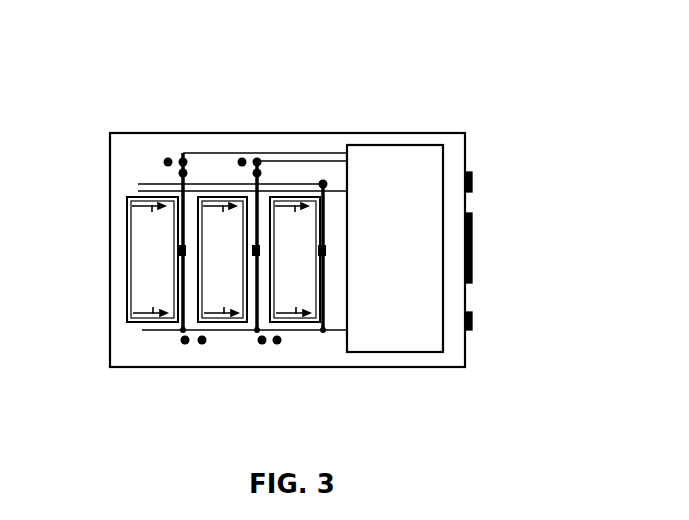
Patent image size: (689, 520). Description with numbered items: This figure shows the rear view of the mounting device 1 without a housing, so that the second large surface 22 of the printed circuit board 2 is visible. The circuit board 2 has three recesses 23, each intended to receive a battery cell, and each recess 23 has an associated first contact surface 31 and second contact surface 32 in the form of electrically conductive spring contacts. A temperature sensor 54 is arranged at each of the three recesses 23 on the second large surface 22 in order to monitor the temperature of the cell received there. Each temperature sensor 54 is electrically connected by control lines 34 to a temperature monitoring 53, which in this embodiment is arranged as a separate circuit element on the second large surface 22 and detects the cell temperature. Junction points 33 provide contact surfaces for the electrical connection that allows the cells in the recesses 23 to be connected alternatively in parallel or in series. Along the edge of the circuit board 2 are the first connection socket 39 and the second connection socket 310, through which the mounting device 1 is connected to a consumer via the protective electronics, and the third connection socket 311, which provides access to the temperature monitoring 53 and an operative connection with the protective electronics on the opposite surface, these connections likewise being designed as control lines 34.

The mounting device 1 is at (487, 62).
The printed circuit board 2 is at (113, 367).
The second large surface 22 is at (137, 150).
The recesses 23 is at (140, 280).
The first contact surface 31 is at (140, 198).
The second contact surface 32 is at (143, 313).
The junction point 33 is at (177, 157).
The control lines 34 is at (287, 148).
The first connection socket 39 is at (472, 320).
The temperature monitoring 53 is at (405, 147).
The temperature sensor 54 is at (174, 251).
The second connection socket 310 is at (472, 178).
The third connection socket 311 is at (472, 250).